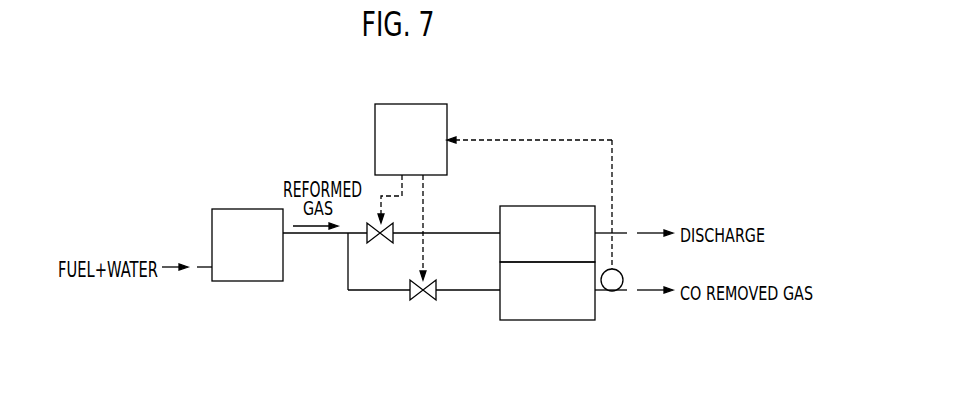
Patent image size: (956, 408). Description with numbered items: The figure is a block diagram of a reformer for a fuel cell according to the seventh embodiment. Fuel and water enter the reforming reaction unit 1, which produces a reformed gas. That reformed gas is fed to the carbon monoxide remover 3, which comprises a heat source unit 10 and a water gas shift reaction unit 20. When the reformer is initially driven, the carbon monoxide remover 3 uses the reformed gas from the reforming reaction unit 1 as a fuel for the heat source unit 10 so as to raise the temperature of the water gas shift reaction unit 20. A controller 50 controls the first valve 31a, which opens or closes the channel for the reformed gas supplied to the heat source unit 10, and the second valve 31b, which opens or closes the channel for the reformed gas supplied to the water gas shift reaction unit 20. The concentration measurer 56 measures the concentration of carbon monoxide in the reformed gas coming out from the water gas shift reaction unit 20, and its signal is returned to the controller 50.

The reforming reaction unit 1 is at (247, 209).
The carbon monoxide remover 3 is at (590, 185).
The heat source unit 10 is at (553, 206).
The water gas shift reaction unit 20 is at (553, 320).
The first valve 31a is at (385, 243).
The second valve 31b is at (428, 300).
The controller 50 is at (410, 104).
The concentration measurer 56 is at (623, 276).